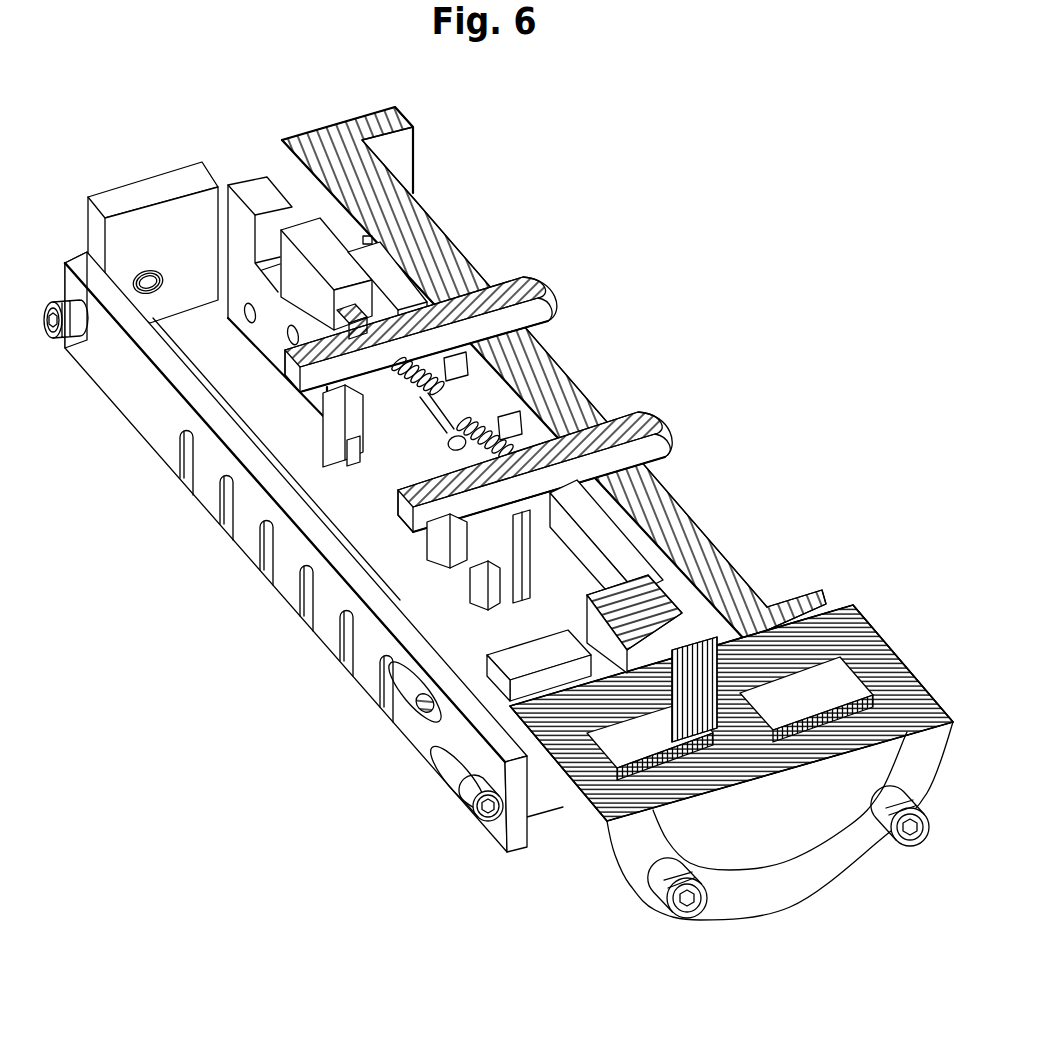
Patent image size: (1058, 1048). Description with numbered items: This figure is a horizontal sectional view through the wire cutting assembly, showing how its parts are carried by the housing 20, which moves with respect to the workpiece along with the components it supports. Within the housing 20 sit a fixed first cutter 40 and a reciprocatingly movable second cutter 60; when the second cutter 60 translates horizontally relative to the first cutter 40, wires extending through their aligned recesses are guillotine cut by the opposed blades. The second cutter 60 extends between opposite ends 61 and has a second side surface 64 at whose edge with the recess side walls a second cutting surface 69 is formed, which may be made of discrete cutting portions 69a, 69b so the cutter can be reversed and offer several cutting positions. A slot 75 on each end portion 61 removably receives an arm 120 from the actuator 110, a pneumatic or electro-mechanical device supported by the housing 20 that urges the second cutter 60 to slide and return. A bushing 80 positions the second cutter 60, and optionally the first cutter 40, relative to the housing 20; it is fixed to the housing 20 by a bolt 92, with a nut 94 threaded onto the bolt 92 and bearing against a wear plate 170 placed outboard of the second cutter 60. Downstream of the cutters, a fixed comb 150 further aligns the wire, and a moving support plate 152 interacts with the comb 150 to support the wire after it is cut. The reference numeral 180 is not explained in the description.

The housing 20 is at (560, 400).
The first cutter 40 is at (392, 277).
The second cutter 60 is at (323, 248).
The ends of the second cutter 61 is at (237, 229).
The second side surface 64 is at (563, 588).
The second cutting surface 69 is at (572, 522).
The cutting portion 69a is at (360, 453).
The cutting portion 69b is at (360, 427).
The slot 75 is at (257, 192).
The bushing 80 is at (478, 412).
The bolt 92 is at (530, 298).
The nut 94 is at (420, 518).
The actuator 110 is at (865, 638).
The arm 120 is at (667, 613).
The comb 150 is at (362, 668).
The moving support plate 152 is at (450, 658).
The wear plate 170 is at (327, 412).
The notch 180 is at (447, 460).